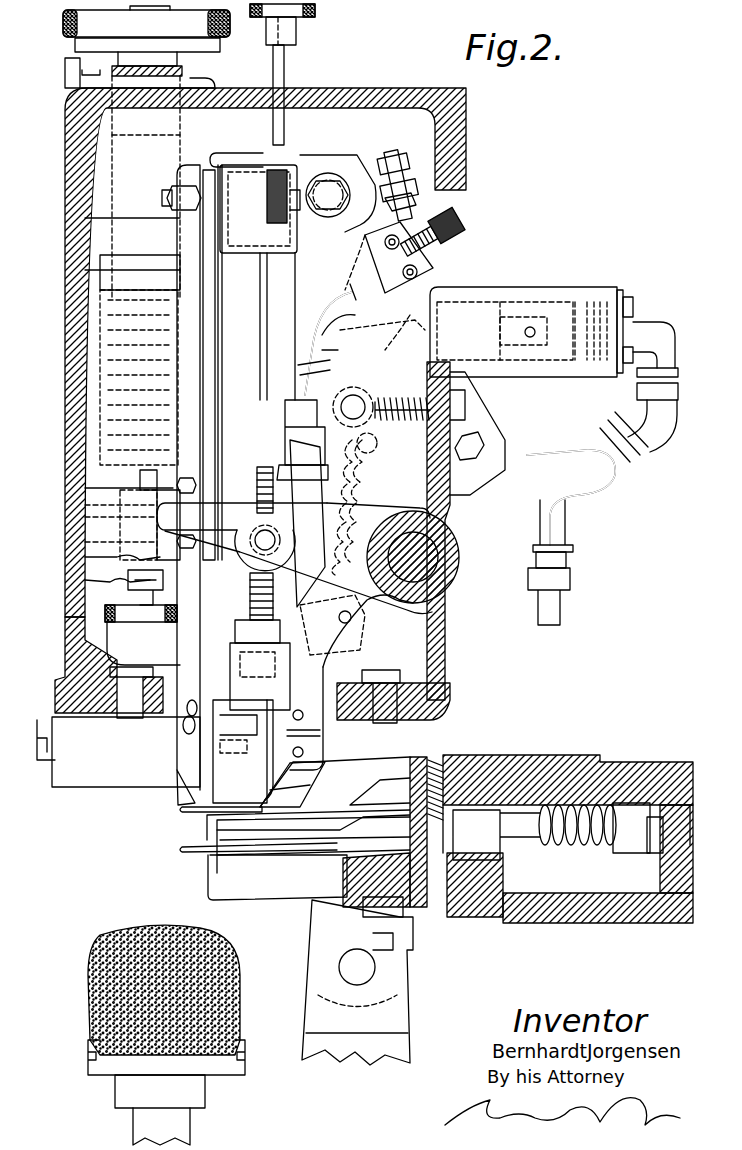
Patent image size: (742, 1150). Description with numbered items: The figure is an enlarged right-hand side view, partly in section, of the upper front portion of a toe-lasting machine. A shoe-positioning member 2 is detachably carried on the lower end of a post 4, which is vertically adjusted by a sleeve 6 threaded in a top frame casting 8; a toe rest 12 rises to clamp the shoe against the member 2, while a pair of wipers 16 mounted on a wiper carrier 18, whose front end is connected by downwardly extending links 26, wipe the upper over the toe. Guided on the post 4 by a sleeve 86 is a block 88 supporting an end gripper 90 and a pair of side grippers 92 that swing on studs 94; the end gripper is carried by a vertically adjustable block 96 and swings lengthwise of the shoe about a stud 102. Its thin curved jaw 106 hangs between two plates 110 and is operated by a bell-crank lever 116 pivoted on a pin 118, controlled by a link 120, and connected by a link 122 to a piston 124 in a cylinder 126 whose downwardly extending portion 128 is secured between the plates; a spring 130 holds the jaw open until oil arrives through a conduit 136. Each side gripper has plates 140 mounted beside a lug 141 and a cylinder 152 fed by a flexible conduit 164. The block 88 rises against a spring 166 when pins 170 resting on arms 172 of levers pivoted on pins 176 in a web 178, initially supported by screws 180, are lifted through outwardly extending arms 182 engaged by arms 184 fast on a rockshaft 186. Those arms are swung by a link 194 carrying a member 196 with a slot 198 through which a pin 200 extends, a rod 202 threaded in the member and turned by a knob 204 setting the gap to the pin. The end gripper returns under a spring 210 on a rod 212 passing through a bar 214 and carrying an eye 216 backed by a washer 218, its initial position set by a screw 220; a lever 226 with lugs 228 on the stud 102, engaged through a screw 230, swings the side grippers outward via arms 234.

The member 2 is at (92, 775).
The rod or post 4 is at (118, 155).
The sleeve 6 is at (182, 72).
The top frame casting 8 is at (70, 363).
The toe rest 12 is at (95, 975).
The wipers 16 is at (185, 850).
The wiper carrier 18 is at (490, 912).
The links 26 is at (310, 1040).
The sleeve 86 is at (110, 235).
The block 88 is at (103, 272).
The end gripper 90 is at (282, 796).
The side grippers 92 is at (165, 800).
The studs 94 is at (167, 198).
The block 96 is at (398, 208).
The stud 102 is at (330, 188).
The jaw 106 is at (228, 758).
The plates 110 is at (445, 480).
The bell-crank lever 116 is at (382, 347).
The pin 118 is at (355, 400).
The link 120 is at (332, 625).
The link 122 is at (407, 325).
The piston 124 is at (536, 305).
The cylinder 126 is at (575, 300).
The downwardly extending portion 128 is at (490, 395).
The spring 130 is at (365, 486).
The conduit 136 is at (558, 600).
The plates 140 is at (222, 292).
The lug 141 is at (250, 265).
The cylinder 152 is at (358, 476).
The flexible conduit 164 is at (358, 300).
The spring 166 is at (100, 322).
The pins 170 is at (138, 480).
The arms 172 is at (130, 516).
The pins 176 is at (72, 557).
The web 178 is at (85, 577).
The screws 180 is at (138, 616).
The arms 182 is at (170, 558).
The arms 184 is at (193, 485).
The rockshaft 186 is at (438, 568).
The link 194 is at (272, 672).
The member 196 is at (252, 588).
The slot 198 is at (280, 500).
The pin 200 is at (258, 548).
The rod 202 is at (285, 78).
The knob 204 is at (316, 10).
The return spring 210 is at (384, 441).
The rod 212 is at (468, 408).
The bar 214 is at (452, 385).
The eye 216 is at (350, 395).
The washer 218 is at (402, 398).
The screw 220 is at (470, 222).
The lever 226 is at (265, 152).
The lugs 228 is at (333, 202).
The screw 230 is at (402, 155).
The arms 234 is at (280, 175).